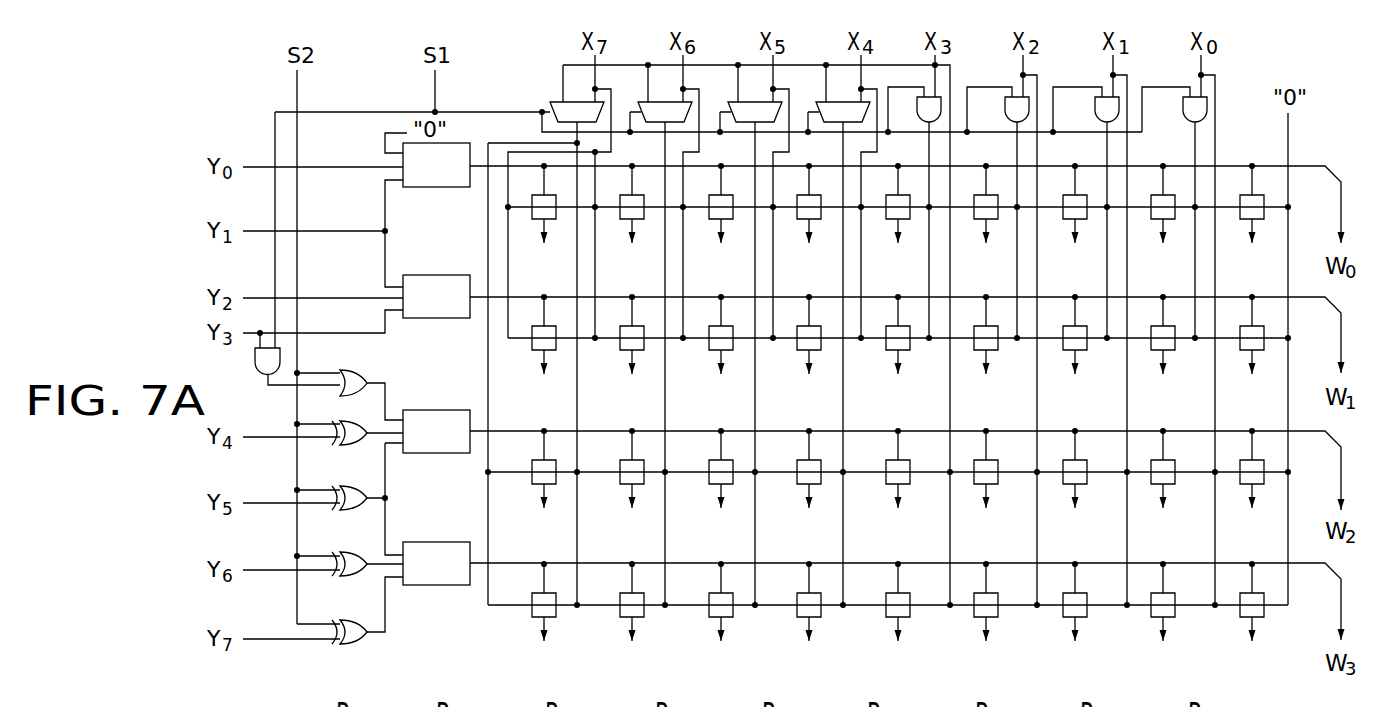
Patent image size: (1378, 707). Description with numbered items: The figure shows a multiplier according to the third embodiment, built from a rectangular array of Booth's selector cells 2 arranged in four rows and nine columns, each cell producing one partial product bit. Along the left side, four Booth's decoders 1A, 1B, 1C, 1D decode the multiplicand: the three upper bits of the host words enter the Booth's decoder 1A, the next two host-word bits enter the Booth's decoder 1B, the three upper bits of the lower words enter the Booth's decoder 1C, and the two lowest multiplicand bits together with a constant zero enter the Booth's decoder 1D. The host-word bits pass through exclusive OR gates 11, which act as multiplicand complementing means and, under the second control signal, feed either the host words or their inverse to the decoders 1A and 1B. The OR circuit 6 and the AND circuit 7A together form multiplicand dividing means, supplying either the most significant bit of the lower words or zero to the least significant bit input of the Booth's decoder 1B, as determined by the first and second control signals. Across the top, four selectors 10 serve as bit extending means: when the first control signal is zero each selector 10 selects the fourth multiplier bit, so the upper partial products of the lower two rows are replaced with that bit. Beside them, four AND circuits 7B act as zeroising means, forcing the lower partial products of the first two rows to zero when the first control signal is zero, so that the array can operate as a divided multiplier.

The Booth's decoder 1A is at (440, 585).
The Booth's decoder 1B is at (440, 453).
The Booth's decoder 1C is at (440, 318).
The Booth's decoder 1D is at (440, 187).
The Booth's selector 2 is at (532, 195).
The OR circuit 6 is at (354, 371).
The AND circuit 7A is at (255, 375).
The AND circuit 7B is at (917, 110).
The selector 10 is at (560, 101).
The exclusive OR gate 11 is at (350, 445).